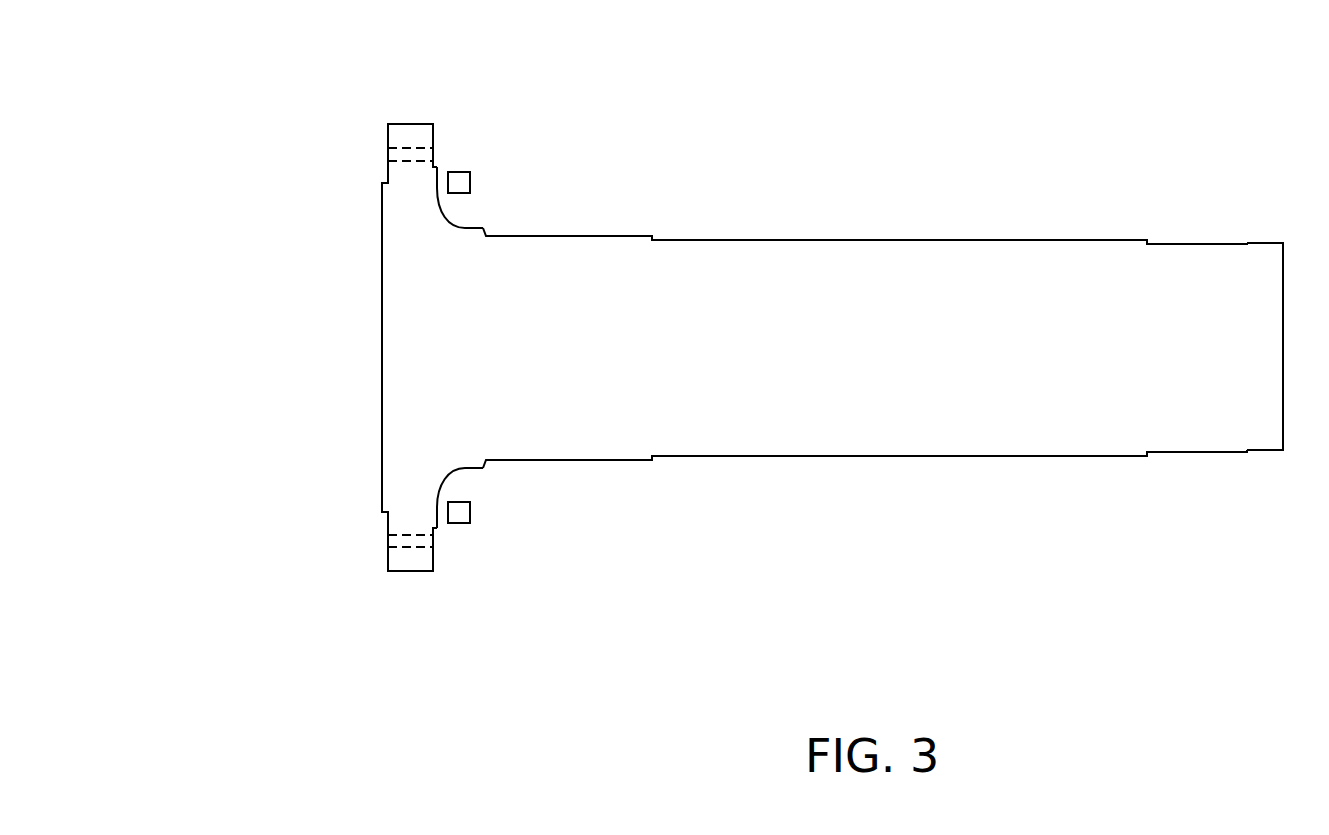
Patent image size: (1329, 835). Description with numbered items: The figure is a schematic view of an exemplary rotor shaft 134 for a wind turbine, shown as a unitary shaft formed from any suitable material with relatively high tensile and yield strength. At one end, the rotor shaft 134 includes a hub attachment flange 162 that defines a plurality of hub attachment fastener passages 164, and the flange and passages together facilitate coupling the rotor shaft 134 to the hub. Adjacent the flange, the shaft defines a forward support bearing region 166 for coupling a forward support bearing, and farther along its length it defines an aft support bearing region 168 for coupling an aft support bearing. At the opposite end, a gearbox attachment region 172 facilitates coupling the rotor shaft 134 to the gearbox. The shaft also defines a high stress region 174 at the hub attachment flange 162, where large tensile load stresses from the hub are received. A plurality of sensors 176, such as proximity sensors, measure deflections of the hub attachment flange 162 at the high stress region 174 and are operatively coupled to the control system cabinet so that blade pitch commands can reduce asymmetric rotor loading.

The rotor shaft 134 is at (737, 139).
The hub attachment flange 162 is at (408, 124).
The hub attachment fastener passages 164 is at (378, 152).
The forward support bearing region 166 is at (498, 212).
The aft support bearing region 168 is at (1070, 478).
The gearbox attachment region 172 is at (1176, 226).
The high stress region 174 is at (428, 197).
The sensors 176 is at (459, 178).